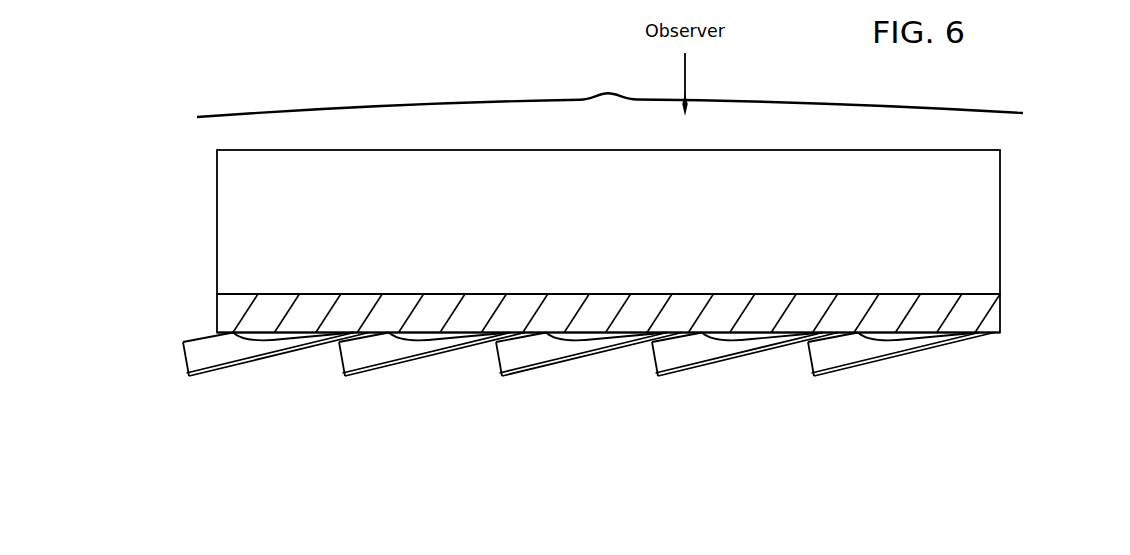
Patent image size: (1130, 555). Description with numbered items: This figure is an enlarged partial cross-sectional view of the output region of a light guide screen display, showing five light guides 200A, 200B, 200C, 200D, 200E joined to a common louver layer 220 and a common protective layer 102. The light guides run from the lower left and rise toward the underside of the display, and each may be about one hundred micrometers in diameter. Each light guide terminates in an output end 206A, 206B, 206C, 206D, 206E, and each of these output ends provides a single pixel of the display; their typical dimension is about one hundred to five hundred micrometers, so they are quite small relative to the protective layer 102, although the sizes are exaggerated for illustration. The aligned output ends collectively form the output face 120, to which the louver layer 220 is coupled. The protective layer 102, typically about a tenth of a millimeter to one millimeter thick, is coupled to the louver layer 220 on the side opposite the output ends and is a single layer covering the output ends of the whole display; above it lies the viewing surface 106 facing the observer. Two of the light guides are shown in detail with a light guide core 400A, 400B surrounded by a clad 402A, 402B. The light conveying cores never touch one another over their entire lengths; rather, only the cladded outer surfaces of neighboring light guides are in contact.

The protective layer 102 is at (984, 253).
The viewing surface 106 is at (610, 92).
The output face 120 is at (1012, 334).
The louver layer 220 is at (993, 318).
The light guide 200A is at (254, 361).
The light guide 200B is at (413, 406).
The light guide 200C is at (589, 383).
The light guide 200D is at (745, 384).
The light guide 200E is at (901, 384).
The output end 206A is at (288, 343).
The output end 206B is at (445, 343).
The output end 206C is at (599, 343).
The output end 206D is at (758, 340).
The output end 206E is at (910, 342).
The light guide core 400A is at (193, 355).
The light guide core 400B is at (353, 362).
The clad 402A is at (195, 340).
The clad 402B is at (373, 372).